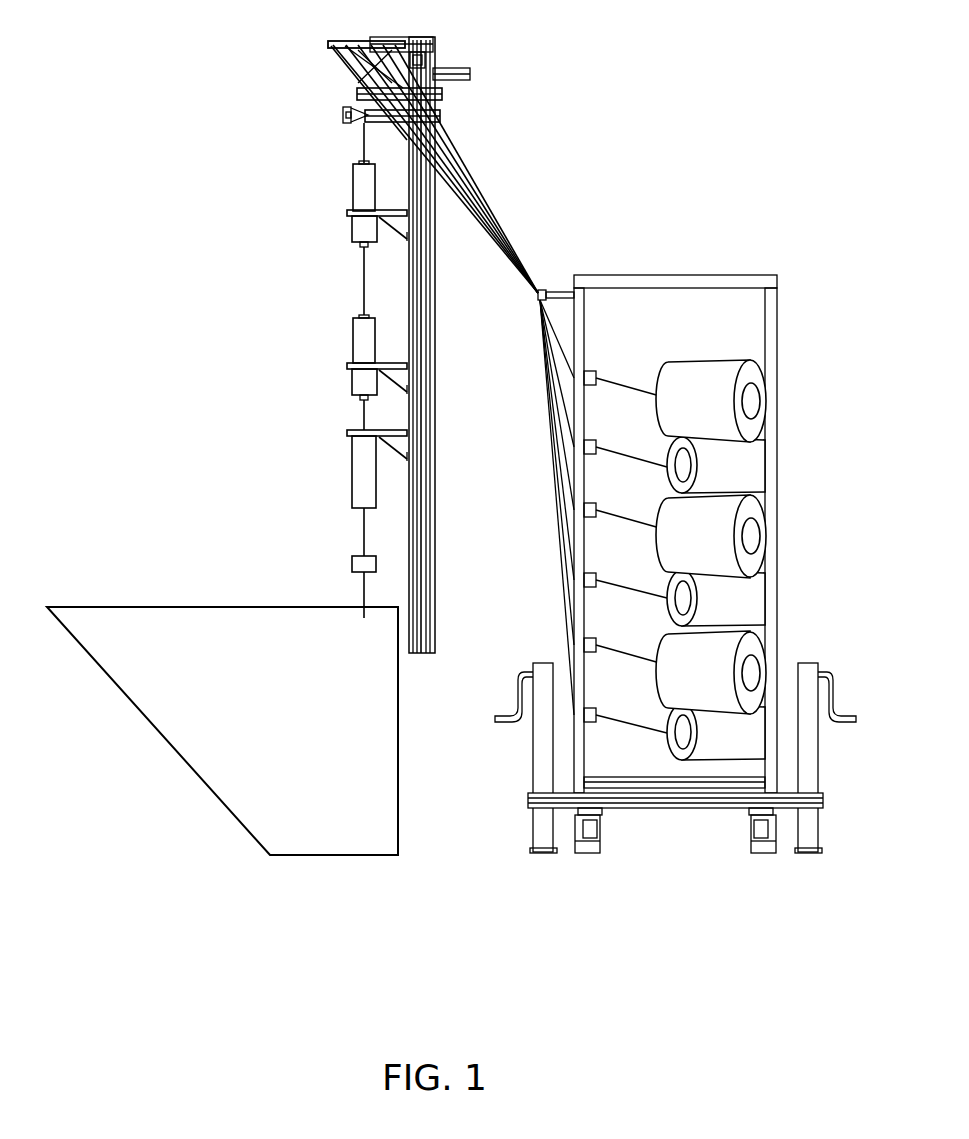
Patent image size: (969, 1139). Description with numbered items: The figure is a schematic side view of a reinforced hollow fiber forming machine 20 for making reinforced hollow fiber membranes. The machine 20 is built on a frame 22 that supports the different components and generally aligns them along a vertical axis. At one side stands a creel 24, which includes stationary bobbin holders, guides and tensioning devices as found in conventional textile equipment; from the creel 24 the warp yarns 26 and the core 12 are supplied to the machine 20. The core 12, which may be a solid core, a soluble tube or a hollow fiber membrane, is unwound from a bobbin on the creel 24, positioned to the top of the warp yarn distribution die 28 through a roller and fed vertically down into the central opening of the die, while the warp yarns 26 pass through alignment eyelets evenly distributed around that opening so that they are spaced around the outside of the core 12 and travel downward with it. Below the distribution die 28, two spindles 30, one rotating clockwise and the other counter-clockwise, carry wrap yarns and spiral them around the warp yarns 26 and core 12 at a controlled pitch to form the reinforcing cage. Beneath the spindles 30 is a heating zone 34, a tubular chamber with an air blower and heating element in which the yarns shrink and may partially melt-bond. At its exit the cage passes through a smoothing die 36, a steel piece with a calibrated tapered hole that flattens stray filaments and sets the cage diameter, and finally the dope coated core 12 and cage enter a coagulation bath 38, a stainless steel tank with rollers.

The reinforced hollow fiber forming machine 20 is at (366, 938).
The frame 22 is at (437, 441).
The creel 24 is at (801, 532).
The warp yarns 26 is at (453, 380).
The core 12 is at (472, 177).
The warp yarn distribution die 28 is at (291, 74).
The spindles 30 is at (347, 222).
The heating zone 34 is at (352, 465).
The smoothing die 36 is at (352, 562).
The coagulation bath 38 is at (170, 744).